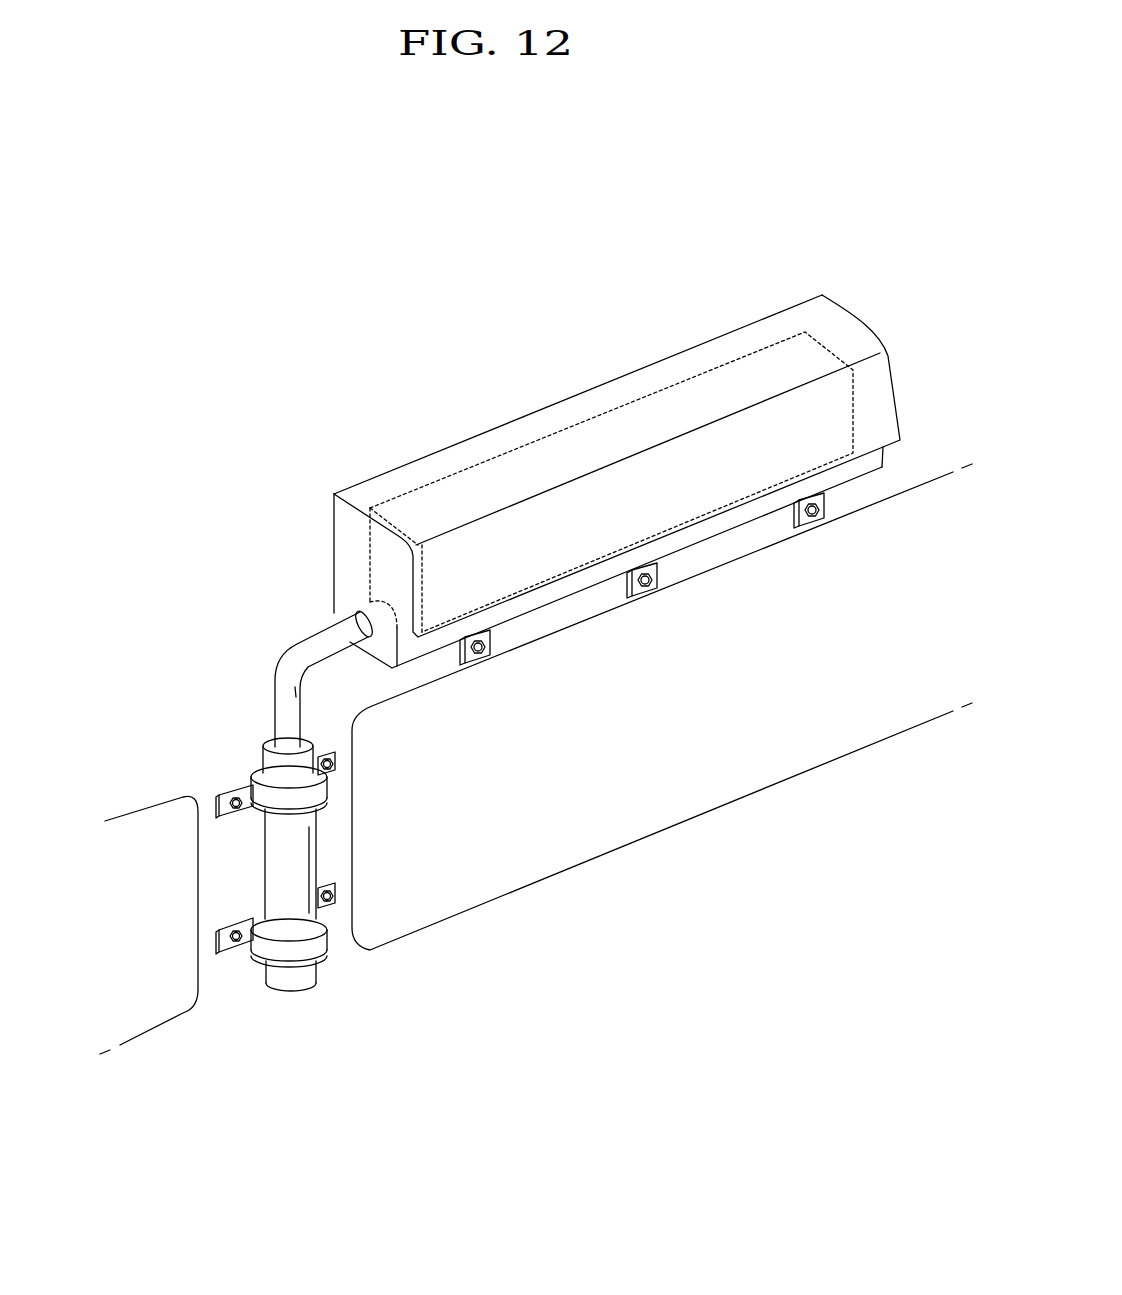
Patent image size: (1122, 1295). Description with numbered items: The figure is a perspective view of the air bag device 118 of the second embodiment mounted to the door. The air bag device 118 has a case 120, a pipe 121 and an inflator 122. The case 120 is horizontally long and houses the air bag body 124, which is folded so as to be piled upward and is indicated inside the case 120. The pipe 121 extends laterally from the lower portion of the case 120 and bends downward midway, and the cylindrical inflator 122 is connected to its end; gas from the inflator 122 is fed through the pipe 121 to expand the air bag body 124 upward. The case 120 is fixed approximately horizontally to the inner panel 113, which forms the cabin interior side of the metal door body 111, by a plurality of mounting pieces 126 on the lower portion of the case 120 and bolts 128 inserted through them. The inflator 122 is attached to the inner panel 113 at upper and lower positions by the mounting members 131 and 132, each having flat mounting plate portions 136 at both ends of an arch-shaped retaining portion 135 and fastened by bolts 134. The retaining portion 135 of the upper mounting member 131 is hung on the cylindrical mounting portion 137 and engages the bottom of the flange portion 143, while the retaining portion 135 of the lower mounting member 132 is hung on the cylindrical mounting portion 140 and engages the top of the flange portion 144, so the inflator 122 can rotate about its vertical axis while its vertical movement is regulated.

The door body 111 is at (831, 779).
The inner panel 113 is at (225, 988).
The air bag device 118 is at (884, 300).
The case 120 is at (807, 300).
The pipe 121 is at (303, 634).
The inflator 122 is at (291, 988).
The air bag body 124 is at (616, 407).
The mounting pieces 126 is at (484, 651).
The bolts 128 is at (478, 657).
The upper side mounting member 131 is at (221, 784).
The lower side mounting member 132 is at (207, 935).
The bolts 134 is at (219, 815).
The retaining portion 135 is at (330, 788).
The mounting plate portions 136 is at (235, 793).
The mounting portion 137 is at (290, 813).
The mounting portion 140 is at (292, 944).
The flange portion 143 is at (252, 746).
The flange portion 144 is at (322, 956).